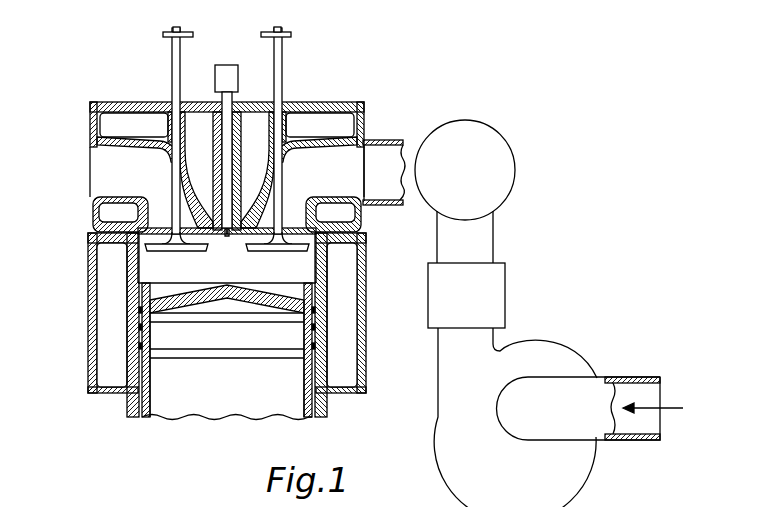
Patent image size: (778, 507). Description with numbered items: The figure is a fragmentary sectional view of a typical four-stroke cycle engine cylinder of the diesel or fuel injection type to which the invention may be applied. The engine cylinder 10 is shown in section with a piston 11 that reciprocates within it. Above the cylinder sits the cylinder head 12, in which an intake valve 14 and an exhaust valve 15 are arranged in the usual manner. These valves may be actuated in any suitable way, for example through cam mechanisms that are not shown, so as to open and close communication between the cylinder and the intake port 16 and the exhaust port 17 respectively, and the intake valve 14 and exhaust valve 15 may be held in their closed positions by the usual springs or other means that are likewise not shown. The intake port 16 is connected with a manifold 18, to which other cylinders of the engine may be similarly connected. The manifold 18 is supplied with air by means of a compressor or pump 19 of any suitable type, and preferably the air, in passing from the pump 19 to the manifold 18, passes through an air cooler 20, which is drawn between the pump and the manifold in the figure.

The engine cylinder 10 is at (147, 266).
The piston 11 is at (253, 298).
The cylinder head 12 is at (227, 150).
The intake valve 14 is at (267, 250).
The exhaust valve 15 is at (176, 250).
The intake port 16 is at (337, 181).
The exhaust port 17 is at (131, 179).
The manifold 18 is at (476, 173).
The compressor or pump 19 is at (573, 358).
The air cooler 20 is at (478, 308).